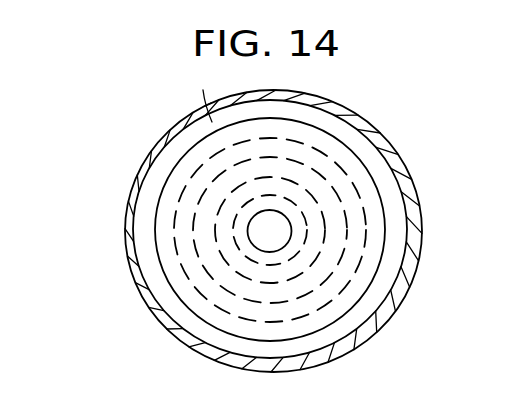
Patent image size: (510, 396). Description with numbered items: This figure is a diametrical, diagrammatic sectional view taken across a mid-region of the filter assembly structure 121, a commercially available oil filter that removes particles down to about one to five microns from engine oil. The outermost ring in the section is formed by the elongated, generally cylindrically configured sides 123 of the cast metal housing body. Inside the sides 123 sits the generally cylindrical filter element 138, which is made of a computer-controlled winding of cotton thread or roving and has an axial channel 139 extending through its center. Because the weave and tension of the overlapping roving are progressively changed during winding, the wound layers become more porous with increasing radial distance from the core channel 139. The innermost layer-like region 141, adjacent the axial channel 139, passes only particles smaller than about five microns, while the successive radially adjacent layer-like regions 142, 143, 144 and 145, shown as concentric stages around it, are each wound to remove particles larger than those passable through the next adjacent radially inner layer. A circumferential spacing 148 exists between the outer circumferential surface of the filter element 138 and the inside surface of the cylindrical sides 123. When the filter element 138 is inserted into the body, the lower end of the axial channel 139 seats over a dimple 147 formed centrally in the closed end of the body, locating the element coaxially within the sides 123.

The filter assembly structure 121 is at (354, 98).
The cylindrical sides 123 is at (373, 135).
The filter element 138 is at (373, 170).
The axial channel 139 is at (279, 230).
The layer-like region 141 is at (253, 208).
The layer-like region 142 is at (226, 208).
The layer-like region 143 is at (196, 212).
The layer-like region 144 is at (181, 245).
The layer-like region 145 is at (169, 276).
The dimple 147 is at (260, 243).
The circumferential spacing 148 is at (182, 94).